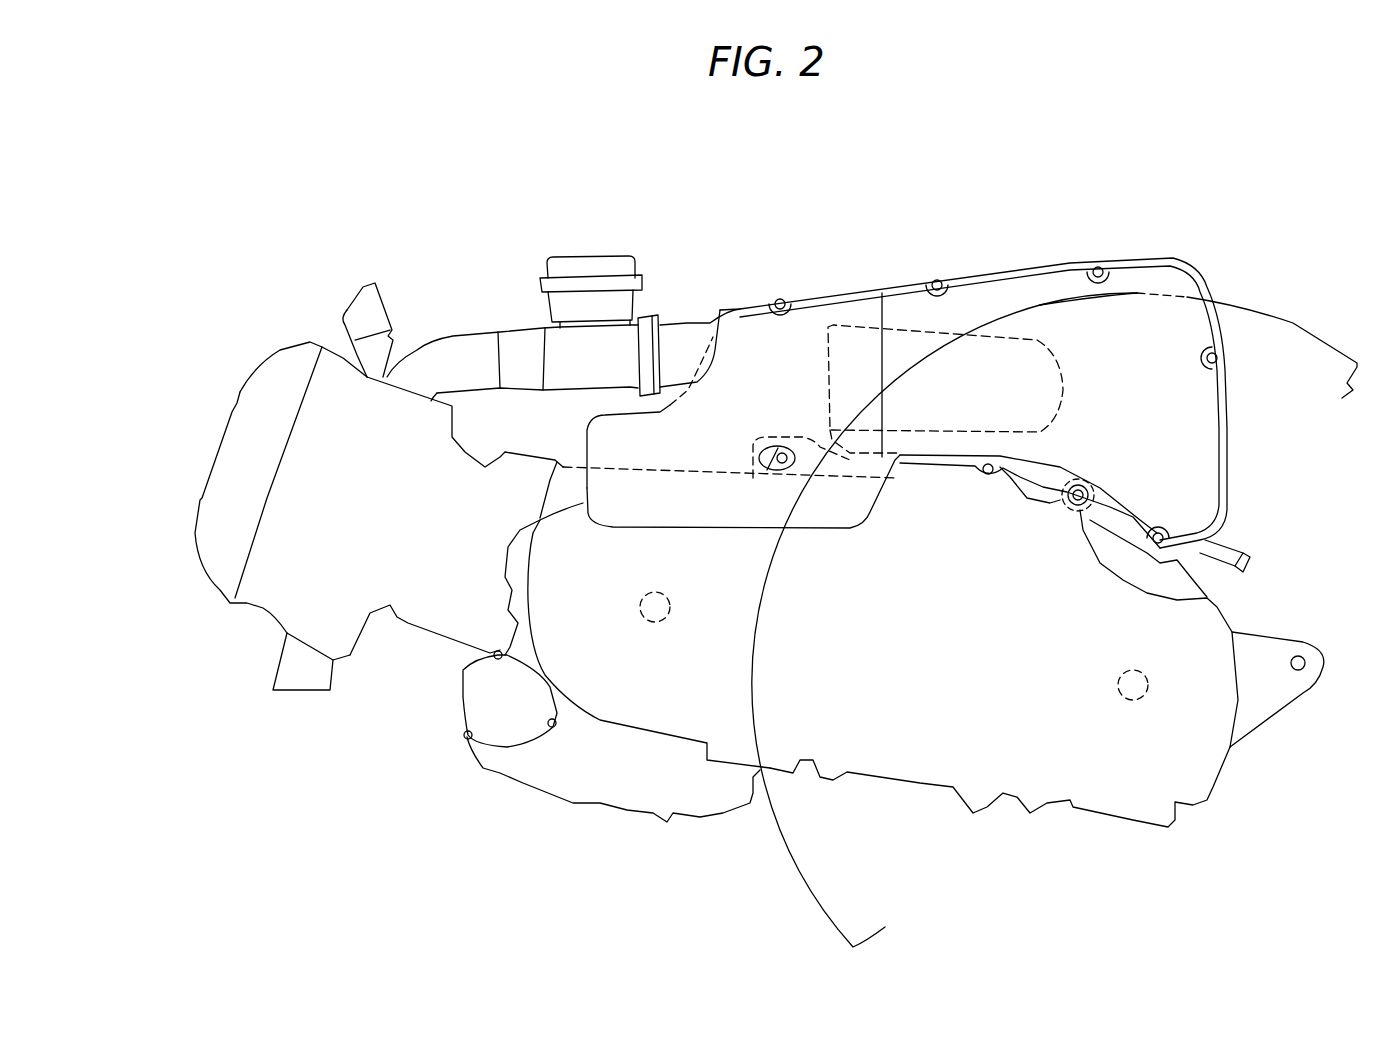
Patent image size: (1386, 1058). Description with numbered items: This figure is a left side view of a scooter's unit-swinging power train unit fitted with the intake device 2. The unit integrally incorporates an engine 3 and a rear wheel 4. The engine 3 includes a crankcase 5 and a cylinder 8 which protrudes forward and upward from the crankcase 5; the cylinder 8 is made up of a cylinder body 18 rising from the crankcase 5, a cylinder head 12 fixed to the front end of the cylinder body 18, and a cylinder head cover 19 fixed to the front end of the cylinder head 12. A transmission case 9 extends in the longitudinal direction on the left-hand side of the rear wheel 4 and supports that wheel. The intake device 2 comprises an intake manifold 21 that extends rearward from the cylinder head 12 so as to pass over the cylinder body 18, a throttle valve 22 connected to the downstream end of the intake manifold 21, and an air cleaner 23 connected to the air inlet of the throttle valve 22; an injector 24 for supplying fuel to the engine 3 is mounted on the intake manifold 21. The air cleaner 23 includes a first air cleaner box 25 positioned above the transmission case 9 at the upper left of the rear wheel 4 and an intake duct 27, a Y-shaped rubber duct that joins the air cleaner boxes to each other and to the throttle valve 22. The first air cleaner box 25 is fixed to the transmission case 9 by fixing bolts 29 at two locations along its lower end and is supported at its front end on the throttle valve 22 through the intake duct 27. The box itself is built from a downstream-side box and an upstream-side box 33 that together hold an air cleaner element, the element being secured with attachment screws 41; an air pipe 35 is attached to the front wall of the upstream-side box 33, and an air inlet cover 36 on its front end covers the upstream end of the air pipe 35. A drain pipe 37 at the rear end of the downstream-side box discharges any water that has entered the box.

The intake device 2 is at (962, 206).
The engine 3 is at (630, 816).
The rear wheel 4 is at (1285, 323).
The crankcase 5 is at (552, 777).
The cylinder 8 is at (407, 629).
The transmission case 9 is at (922, 783).
The cylinder head 12 is at (318, 412).
The cylinder body 18 is at (453, 613).
The cylinder head cover 19 is at (245, 425).
The intake manifold 21 is at (468, 335).
The throttle valve 22 is at (578, 252).
The air cleaner 23 is at (1138, 254).
The injector 24 is at (353, 300).
The first air cleaner box 25 is at (1000, 302).
The intake duct 27 is at (683, 325).
The fixing bolts 29 is at (780, 445).
The upstream-side box 33 is at (1157, 327).
The air pipe 35 is at (896, 333).
The air inlet cover 36 is at (806, 333).
The drain pipe 37 is at (1243, 538).
The attachment screws 41 is at (1220, 360).